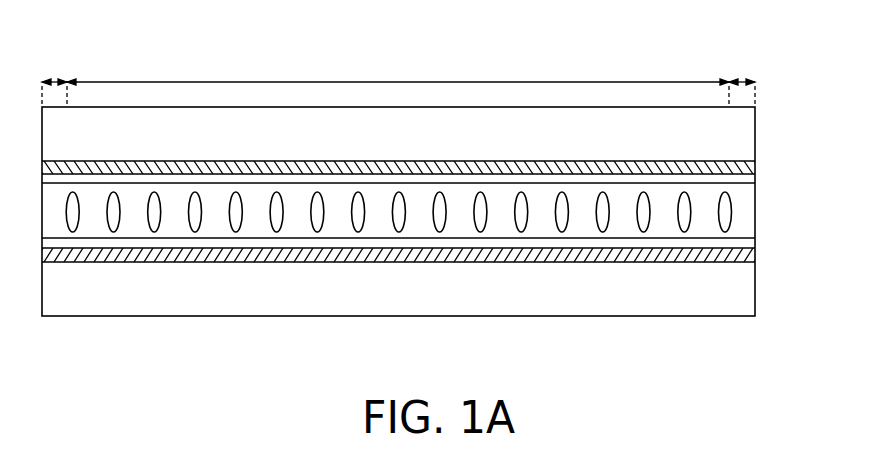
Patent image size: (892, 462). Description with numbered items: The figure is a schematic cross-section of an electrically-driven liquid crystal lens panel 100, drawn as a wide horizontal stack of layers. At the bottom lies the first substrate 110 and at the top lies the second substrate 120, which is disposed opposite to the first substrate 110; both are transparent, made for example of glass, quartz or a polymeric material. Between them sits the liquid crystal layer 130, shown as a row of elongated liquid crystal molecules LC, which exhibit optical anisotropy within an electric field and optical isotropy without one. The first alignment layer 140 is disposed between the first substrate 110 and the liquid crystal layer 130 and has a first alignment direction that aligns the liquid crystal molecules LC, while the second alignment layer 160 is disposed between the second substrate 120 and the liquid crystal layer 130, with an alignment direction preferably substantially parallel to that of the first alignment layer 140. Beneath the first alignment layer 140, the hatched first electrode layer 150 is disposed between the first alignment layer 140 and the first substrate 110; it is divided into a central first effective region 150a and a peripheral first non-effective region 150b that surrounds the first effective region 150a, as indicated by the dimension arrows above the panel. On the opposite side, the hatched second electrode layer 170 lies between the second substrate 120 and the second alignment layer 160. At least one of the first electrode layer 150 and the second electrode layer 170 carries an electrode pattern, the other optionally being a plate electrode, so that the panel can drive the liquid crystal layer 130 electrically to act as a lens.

The electrically-driven liquid crystal lens panel 100 is at (752, 367).
The first substrate 110 is at (745, 297).
The second substrate 120 is at (740, 127).
The liquid crystal layer 130 is at (448, 218).
The first alignment layer 140 is at (748, 247).
The first electrode layer 150 is at (748, 258).
The first effective region 150a is at (388, 81).
The first non-effective region 150b is at (55, 80).
The second alignment layer 160 is at (755, 182).
The second electrode layer 170 is at (755, 165).
The liquid crystal molecules LC is at (726, 207).